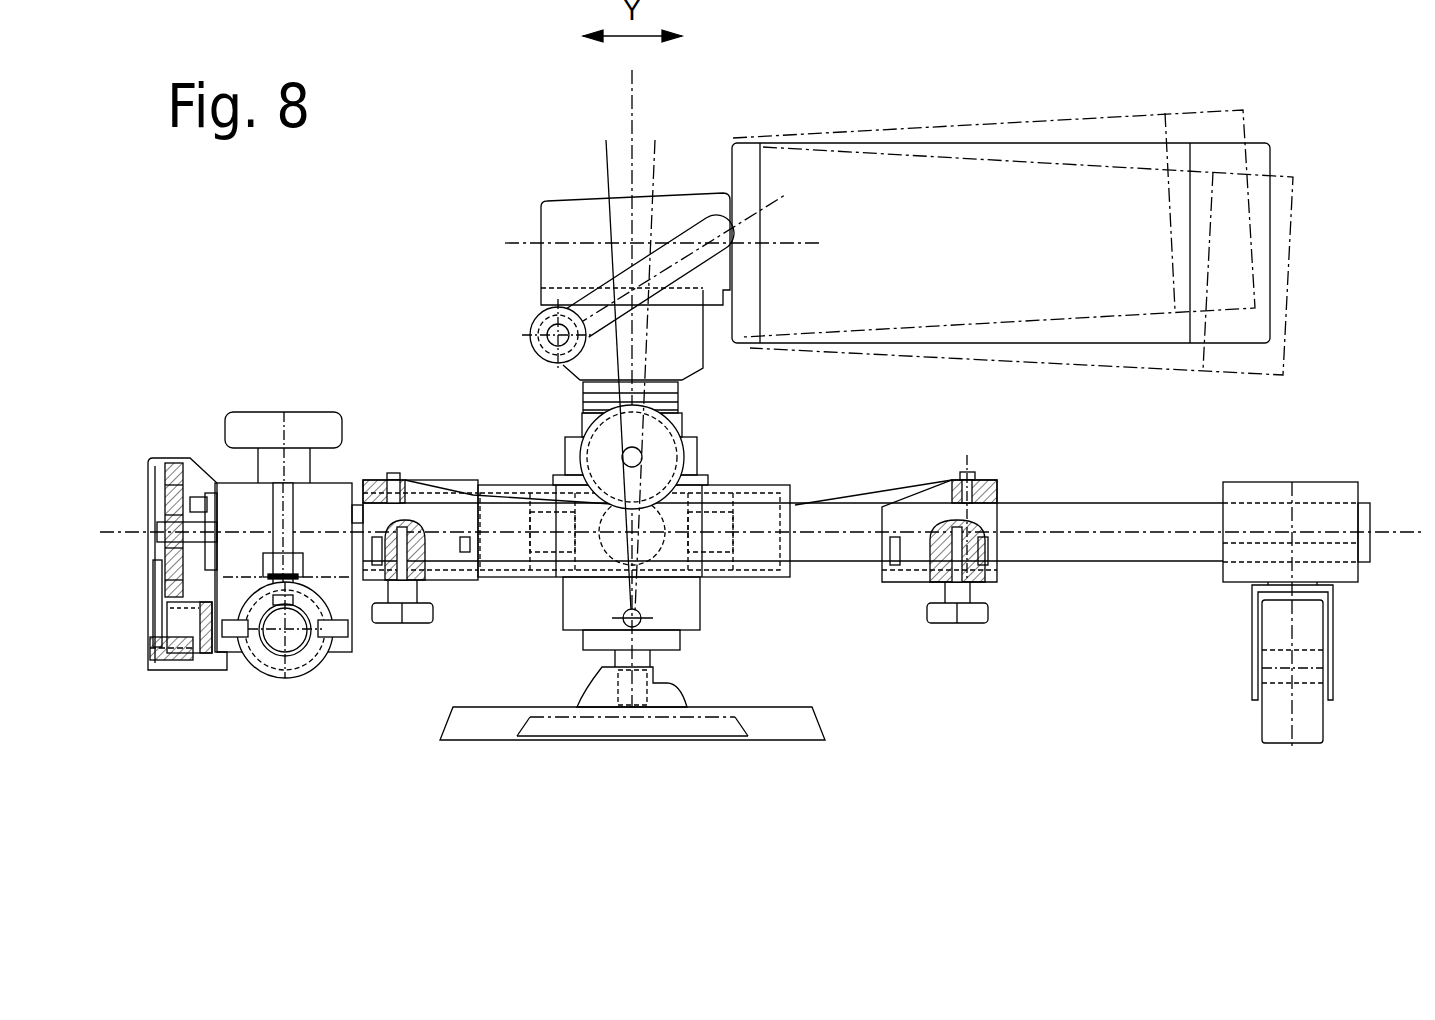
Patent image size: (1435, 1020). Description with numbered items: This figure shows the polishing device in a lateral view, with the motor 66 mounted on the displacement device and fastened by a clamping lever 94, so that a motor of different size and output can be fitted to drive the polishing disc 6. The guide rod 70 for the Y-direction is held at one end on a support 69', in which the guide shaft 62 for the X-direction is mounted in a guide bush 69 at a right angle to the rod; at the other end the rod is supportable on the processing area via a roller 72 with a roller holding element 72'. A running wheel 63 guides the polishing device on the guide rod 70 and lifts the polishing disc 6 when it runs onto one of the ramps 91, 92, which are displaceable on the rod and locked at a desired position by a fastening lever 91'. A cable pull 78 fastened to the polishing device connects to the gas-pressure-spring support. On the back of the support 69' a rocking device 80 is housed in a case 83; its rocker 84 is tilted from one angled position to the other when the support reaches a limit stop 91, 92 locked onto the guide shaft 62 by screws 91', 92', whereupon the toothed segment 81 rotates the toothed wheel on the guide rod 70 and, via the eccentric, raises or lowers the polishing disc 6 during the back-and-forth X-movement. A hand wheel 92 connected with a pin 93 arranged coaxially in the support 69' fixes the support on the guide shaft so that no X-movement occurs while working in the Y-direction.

The polishing disc 6 is at (488, 728).
The guide shaft 62 is at (268, 672).
The running wheel 63 is at (603, 457).
The motor 66 is at (993, 287).
The guide bush 69 is at (283, 607).
The support 69' is at (328, 607).
The guide rod 70 is at (1105, 543).
The roller 72 is at (1255, 663).
The roller holding element 72' is at (1296, 590).
The cable pull 78 is at (353, 505).
The rocking device 80 is at (172, 446).
The toothed segment 81 is at (162, 458).
The case 83 is at (198, 662).
The rocker 84 is at (150, 668).
The ramp / limit stop 91 is at (495, 489).
The fastening lever / screw 91' is at (439, 605).
The ramp / limit stop / hand wheel 92 is at (611, 469).
The screw 92' is at (954, 635).
The pin 93 is at (336, 609).
The clamping lever 94 is at (597, 297).